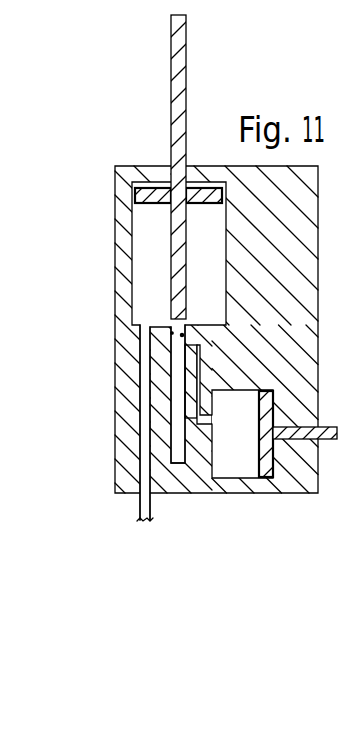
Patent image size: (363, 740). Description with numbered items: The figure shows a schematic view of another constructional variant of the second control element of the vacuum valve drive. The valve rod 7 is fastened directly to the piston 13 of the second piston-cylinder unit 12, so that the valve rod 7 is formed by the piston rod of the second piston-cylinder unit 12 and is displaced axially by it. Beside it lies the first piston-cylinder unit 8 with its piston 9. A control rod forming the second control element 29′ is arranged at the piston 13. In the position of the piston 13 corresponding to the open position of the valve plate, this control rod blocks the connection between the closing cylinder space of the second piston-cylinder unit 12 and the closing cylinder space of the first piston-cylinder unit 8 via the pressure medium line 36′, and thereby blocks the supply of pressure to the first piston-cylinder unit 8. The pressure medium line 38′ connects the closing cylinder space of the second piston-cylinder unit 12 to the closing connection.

The valve rod 7 is at (177, 100).
The first piston-cylinder unit 8 is at (265, 485).
The piston of the first piston-cylinder unit 9 is at (270, 393).
The second piston-cylinder unit 12 is at (123, 242).
The piston of the second piston-cylinder unit 13 is at (148, 186).
The second control element 29′ is at (180, 258).
The pressure medium line 36′ is at (200, 375).
The pressure medium line 38′ is at (145, 437).